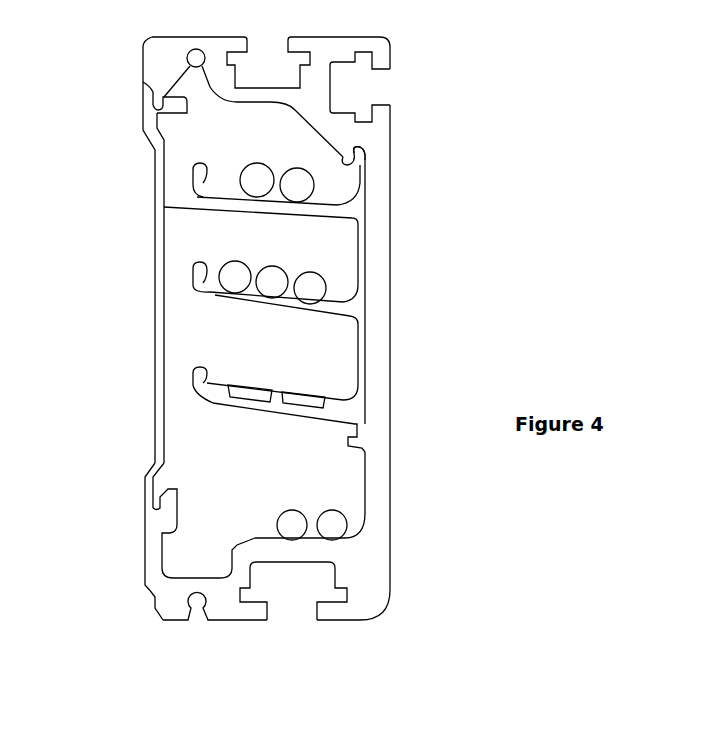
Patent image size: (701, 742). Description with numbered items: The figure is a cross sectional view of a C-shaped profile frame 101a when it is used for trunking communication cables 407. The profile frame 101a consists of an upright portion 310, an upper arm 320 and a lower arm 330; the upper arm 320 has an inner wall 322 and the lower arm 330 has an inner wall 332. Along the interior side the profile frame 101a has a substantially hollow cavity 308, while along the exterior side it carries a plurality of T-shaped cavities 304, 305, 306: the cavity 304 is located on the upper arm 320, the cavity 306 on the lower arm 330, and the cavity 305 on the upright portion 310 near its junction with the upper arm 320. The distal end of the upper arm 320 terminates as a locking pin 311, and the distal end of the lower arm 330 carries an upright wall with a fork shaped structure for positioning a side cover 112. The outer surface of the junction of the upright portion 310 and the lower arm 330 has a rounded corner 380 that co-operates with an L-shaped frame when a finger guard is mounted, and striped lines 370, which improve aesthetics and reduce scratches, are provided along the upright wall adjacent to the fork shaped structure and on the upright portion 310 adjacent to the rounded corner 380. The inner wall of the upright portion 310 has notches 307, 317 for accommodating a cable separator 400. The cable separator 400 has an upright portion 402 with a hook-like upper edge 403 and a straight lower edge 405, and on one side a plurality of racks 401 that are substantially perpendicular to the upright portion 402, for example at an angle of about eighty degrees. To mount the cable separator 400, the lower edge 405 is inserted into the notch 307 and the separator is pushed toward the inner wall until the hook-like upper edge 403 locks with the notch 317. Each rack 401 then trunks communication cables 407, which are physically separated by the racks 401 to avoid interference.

The profile frame 101a is at (436, 642).
The side cover 112 is at (165, 207).
The T-shaped cavity 304 is at (270, 67).
The T-shaped cavity 305 is at (358, 83).
The T-shaped cavity 306 is at (307, 595).
The notch 307 is at (360, 440).
The hollow cavity 308 is at (289, 366).
The upright portion 310 is at (377, 349).
The locking pin 311 is at (153, 108).
The notch 317 is at (340, 140).
The upper arm 320 is at (178, 47).
The inner wall 322 is at (275, 106).
The lower arm 330 is at (237, 612).
The inner wall 332 is at (253, 543).
The striped lines 370 is at (145, 543).
The rounded corner 380 is at (377, 596).
The cable separator 400 is at (352, 300).
The racks 401 is at (202, 172).
The upright portion 402 is at (358, 243).
The hook-like upper edge 403 is at (363, 157).
The straight lower edge 405 is at (363, 430).
The communication cables 407 is at (240, 181).